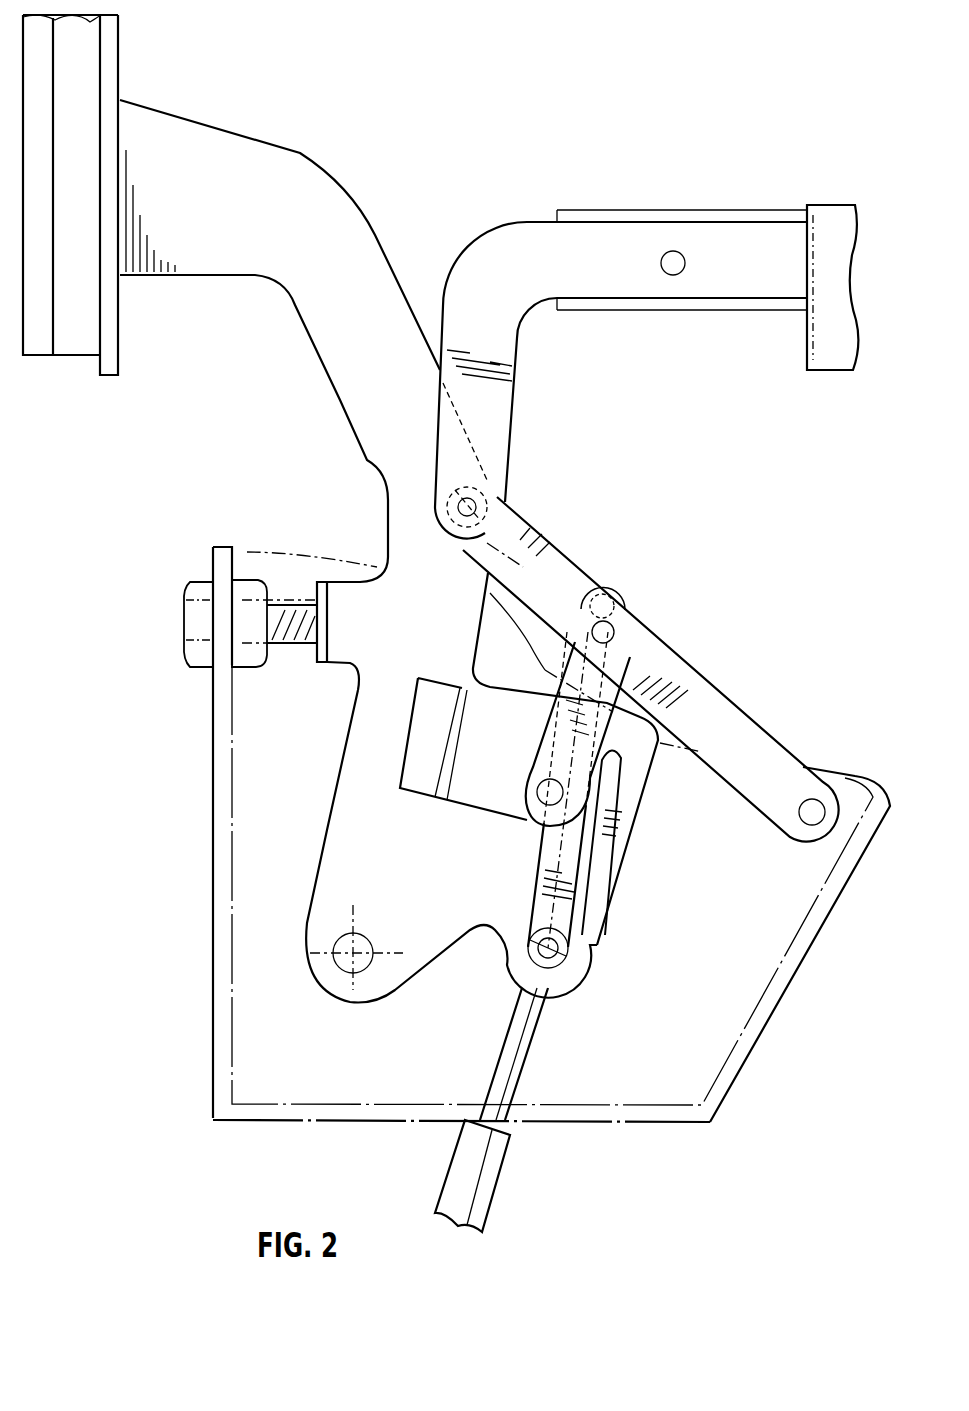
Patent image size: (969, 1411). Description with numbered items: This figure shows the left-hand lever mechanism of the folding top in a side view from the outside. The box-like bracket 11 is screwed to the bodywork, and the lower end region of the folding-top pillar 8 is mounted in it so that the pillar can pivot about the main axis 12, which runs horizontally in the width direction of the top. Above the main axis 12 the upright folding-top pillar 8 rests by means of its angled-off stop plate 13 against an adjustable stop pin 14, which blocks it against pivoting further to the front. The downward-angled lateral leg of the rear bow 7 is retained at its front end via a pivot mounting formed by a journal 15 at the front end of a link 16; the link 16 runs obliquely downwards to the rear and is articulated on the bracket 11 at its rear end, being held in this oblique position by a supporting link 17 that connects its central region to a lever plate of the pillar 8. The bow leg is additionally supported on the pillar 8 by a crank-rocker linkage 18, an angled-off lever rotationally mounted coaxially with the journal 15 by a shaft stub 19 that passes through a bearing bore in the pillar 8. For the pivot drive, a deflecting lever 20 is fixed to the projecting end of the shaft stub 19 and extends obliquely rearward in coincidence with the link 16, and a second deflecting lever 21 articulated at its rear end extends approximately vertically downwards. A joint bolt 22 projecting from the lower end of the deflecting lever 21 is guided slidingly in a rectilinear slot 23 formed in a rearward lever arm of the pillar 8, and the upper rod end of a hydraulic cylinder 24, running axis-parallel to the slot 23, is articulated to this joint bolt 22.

The rear bow 7 is at (834, 206).
The folding-top pillar 8 is at (210, 105).
The bracket 11 is at (220, 758).
The main axis 12 is at (350, 946).
The stop plate 13 is at (325, 596).
The stop pin 14 is at (293, 607).
The journal 15 is at (470, 508).
The link 16 is at (683, 690).
The supporting link 17 is at (527, 780).
The crank-rocker linkage 18 is at (506, 245).
The shaft stub 19 is at (470, 500).
The deflecting lever 20 is at (600, 585).
The deflecting lever 21 is at (587, 833).
The joint bolt 22 is at (572, 940).
The slot 23 is at (607, 782).
The hydraulic cylinder 24 is at (493, 1200).